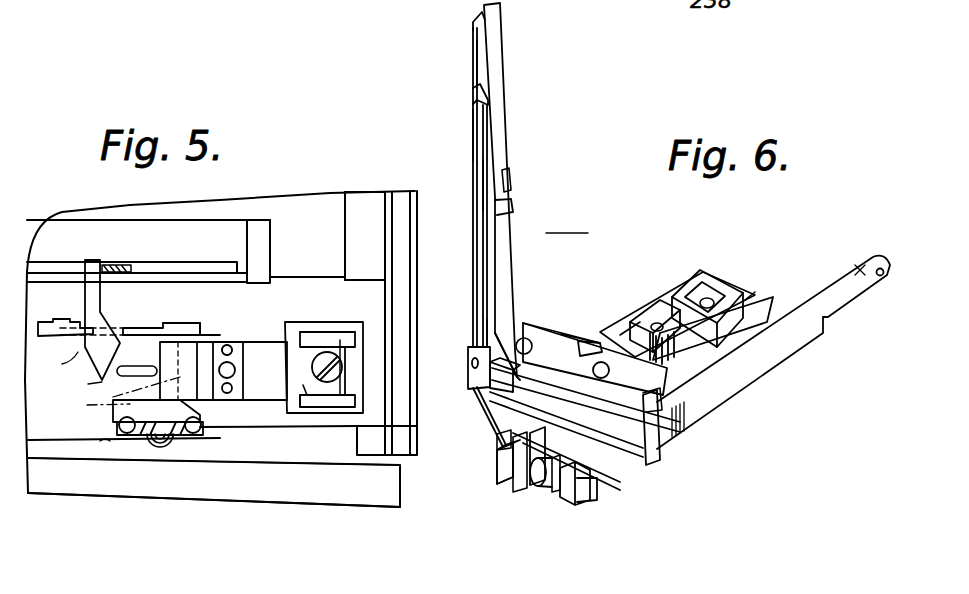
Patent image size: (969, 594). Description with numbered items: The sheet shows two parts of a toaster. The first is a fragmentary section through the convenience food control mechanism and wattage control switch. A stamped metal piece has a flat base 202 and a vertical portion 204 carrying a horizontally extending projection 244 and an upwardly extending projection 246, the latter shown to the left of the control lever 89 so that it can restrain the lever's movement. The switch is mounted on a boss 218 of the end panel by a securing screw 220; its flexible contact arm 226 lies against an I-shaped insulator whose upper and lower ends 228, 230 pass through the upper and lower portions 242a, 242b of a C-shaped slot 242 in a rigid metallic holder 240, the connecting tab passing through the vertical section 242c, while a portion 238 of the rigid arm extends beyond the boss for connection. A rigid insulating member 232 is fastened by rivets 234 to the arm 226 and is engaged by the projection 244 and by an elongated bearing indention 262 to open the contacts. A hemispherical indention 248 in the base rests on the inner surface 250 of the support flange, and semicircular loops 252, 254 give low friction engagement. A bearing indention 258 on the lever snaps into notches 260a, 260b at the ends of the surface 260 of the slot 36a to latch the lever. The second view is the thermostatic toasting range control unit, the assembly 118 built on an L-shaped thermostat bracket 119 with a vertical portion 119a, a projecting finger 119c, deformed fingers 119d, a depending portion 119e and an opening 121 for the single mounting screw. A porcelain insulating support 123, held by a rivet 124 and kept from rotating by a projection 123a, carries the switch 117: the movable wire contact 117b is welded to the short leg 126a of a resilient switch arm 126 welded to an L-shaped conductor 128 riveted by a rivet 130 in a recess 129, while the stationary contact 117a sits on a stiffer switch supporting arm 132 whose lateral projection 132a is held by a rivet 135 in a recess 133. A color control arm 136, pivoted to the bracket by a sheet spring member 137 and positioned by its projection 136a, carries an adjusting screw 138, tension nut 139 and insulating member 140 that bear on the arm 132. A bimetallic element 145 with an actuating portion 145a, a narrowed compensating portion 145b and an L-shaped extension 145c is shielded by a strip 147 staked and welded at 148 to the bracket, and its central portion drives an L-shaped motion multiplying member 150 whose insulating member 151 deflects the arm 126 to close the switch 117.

In FIG. 5, the slot 36a is at (52, 357).
In FIG. 5, the control lever 89 is at (118, 265).
In FIG. 5, the base surface 202 is at (117, 427).
In FIG. 5, the vertical portion 204 is at (71, 384).
In FIG. 5, the boss 218 is at (290, 321).
In FIG. 5, the securing screw 220 is at (312, 367).
In FIG. 5, the flexible contact arm 226 is at (265, 401).
In FIG. 5, the upper end of I-shaped insulator 228 is at (308, 331).
In FIG. 5, the lower end of I-shaped insulator 230 is at (305, 397).
In FIG. 5, the insulating member 232 is at (176, 402).
In FIG. 5, the rivets 234 is at (227, 345).
In FIG. 5, the portion of rigid contact arm 238 is at (376, 321).
In FIG. 5, the rigid metallic holder 240 is at (307, 383).
In FIG. 5, the C-shaped slot 242 is at (353, 408).
In FIG. 5, the upper portion of slot 242a is at (338, 336).
In FIG. 5, the lower portion of slot 242b is at (347, 433).
In FIG. 5, the vertical section of slot 242c is at (387, 441).
In FIG. 5, the horizontally extending projection 244 is at (109, 398).
In FIG. 5, the upwardly extending projection 246 is at (90, 263).
In FIG. 5, the hemispherically-shaped indention 248 is at (158, 437).
In FIG. 5, the inner surface of support flange 250 is at (120, 433).
In FIG. 5, the semicircular metal loop 252 is at (108, 443).
In FIG. 5, the semicircular metal loop 254 is at (172, 438).
In FIG. 5, the bearing indention 258 is at (150, 326).
In FIG. 5, the surface 260 is at (165, 327).
In FIG. 5, the notch 260a is at (58, 321).
In FIG. 5, the notch 260b is at (200, 313).
In FIG. 5, the bearing indention 262 is at (130, 367).
In FIG. 6, the switch 117 is at (464, 463).
In FIG. 6, the stationary contact 117a is at (518, 476).
In FIG. 6, the movable contact 117b is at (498, 473).
In FIG. 6, the thermostat and color control assembly 118 is at (567, 221).
In FIG. 6, the thermostat bracket 119 is at (487, 241).
In FIG. 6, the vertical portion of bracket 119a is at (497, 218).
In FIG. 6, the projecting finger 119c is at (640, 385).
In FIG. 6, the deformed fingers 119d is at (580, 343).
In FIG. 6, the depending portion 119e is at (657, 461).
In FIG. 6, the opening 121 is at (592, 372).
In FIG. 6, the insulating support 123 is at (535, 326).
In FIG. 6, the projection 123a is at (577, 330).
In FIG. 6, the rivet 124 is at (526, 337).
In FIG. 6, the switch arm 126 is at (570, 411).
In FIG. 6, the short leg of switch arm 126a is at (495, 441).
In FIG. 6, the L-shaped conductor 128 is at (660, 312).
In FIG. 6, the recess 129 is at (633, 315).
In FIG. 6, the rivet 130 is at (656, 322).
In FIG. 6, the switch supporting arm 132 is at (803, 297).
In FIG. 6, the lateral projection 132a is at (747, 308).
In FIG. 6, the recess 133 is at (700, 280).
In FIG. 6, the rivet 135 is at (706, 298).
In FIG. 6, the color control arm 136 is at (760, 372).
In FIG. 6, the projection 136a is at (860, 268).
In FIG. 6, the sheet spring member 137 is at (700, 408).
In FIG. 6, the adjusting screw 138 is at (583, 503).
In FIG. 6, the tension nut 139 is at (555, 495).
In FIG. 6, the insulating member 140 is at (538, 488).
In FIG. 6, the bimetallic element 145 is at (461, 85).
In FIG. 6, the upper portion of bimetal 145a is at (476, 59).
In FIG. 6, the compensating portion 145b is at (472, 138).
In FIG. 6, the L-shaped extension 145c is at (473, 23).
In FIG. 6, the shielding and support strip 147 is at (498, 47).
In FIG. 6, the staking and welding 148 is at (508, 178).
In FIG. 6, the switch operating and motion multiplying member 150 is at (480, 190).
In FIG. 6, the insulating member 151 is at (477, 397).